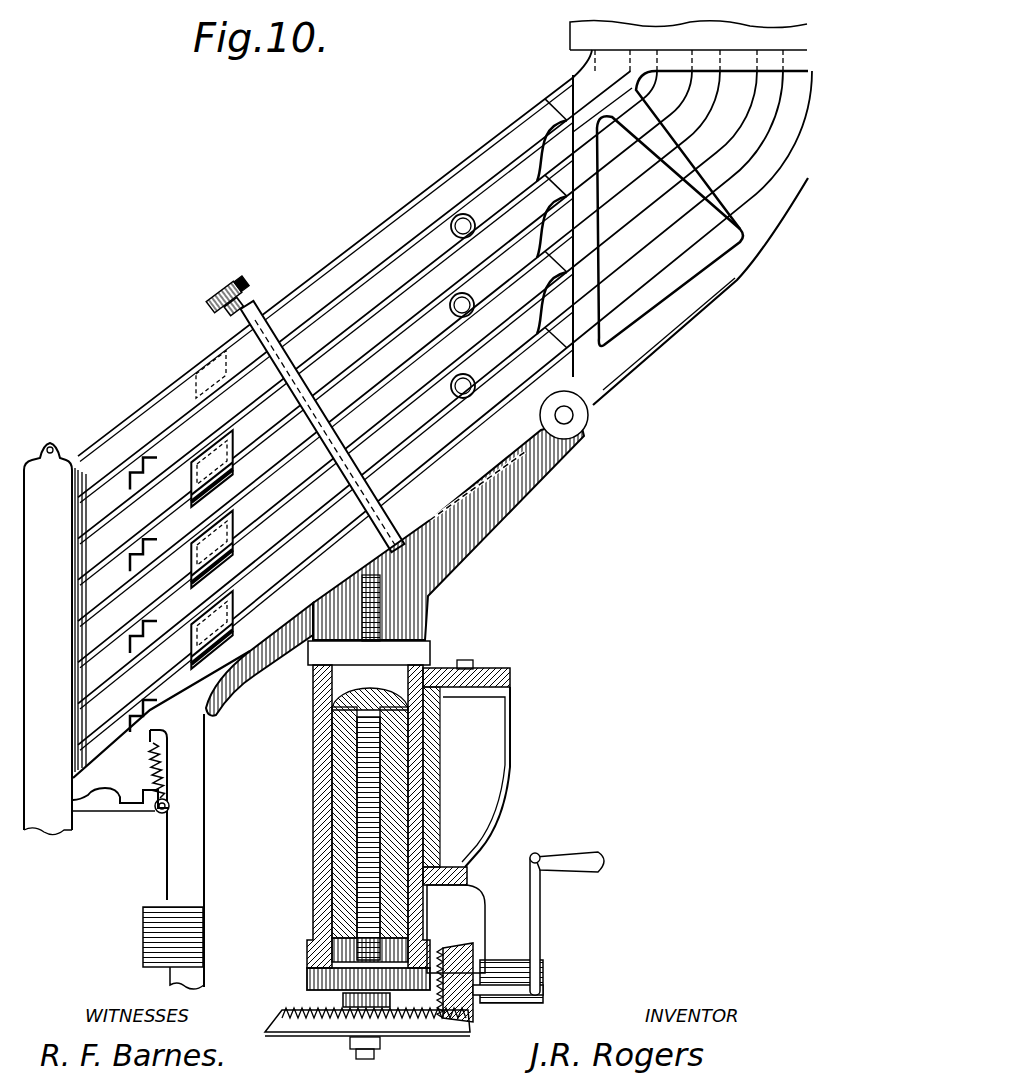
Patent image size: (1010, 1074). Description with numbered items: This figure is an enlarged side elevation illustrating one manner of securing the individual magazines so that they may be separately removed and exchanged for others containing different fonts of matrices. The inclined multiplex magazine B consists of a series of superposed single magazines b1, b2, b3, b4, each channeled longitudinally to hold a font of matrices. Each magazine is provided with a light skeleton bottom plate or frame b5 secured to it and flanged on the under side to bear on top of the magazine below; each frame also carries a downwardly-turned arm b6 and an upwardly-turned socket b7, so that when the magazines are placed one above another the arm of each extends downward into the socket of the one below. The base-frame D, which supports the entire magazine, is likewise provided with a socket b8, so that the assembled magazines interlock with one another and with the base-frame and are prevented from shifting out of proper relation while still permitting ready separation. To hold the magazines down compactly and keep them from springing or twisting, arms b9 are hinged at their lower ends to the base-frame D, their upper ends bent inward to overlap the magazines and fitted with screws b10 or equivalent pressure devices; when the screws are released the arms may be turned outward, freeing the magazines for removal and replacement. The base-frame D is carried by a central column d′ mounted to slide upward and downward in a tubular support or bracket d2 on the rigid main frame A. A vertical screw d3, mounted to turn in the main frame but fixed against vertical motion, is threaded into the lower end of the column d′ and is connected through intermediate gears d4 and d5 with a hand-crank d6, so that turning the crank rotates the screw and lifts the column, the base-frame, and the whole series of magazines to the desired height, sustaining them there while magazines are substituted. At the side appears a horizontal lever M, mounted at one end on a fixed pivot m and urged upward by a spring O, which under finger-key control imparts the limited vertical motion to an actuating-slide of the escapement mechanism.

The inclined multiplex magazine B is at (416, 427).
The single magazine b1 is at (354, 276).
The single magazine b2 is at (385, 328).
The single magazine b3 is at (417, 369).
The single magazine b4 is at (445, 410).
The skeleton bottom plate or frame b5 is at (489, 196).
The downwardly-turned arm b6 is at (198, 438).
The upwardly-turned socket b7 is at (232, 452).
The socket b8 is at (233, 607).
The arm b9 is at (323, 426).
The screw b10 is at (239, 289).
The base-frame D is at (482, 478).
The central column d′ is at (430, 640).
The tubular support or bracket d2 is at (318, 757).
The vertical screw d3 is at (347, 830).
The gear d4 is at (413, 1033).
The gear d5 is at (477, 1010).
The hand-crank d6 is at (538, 927).
The main frame A is at (510, 752).
The spring O is at (144, 770).
The fixed pivot m is at (170, 803).
The horizontal lever M is at (131, 805).